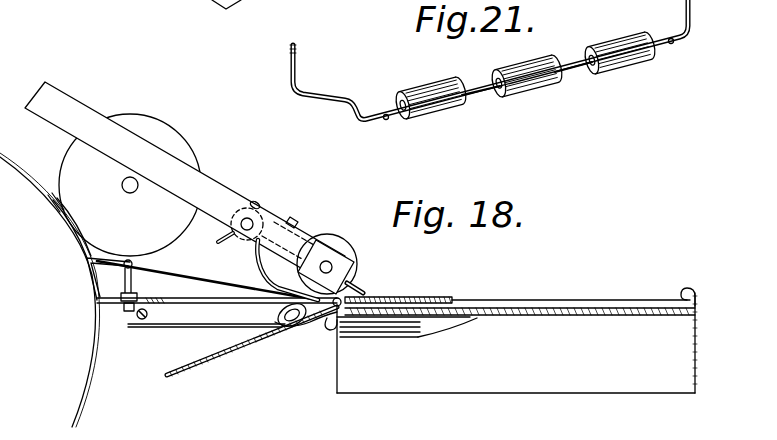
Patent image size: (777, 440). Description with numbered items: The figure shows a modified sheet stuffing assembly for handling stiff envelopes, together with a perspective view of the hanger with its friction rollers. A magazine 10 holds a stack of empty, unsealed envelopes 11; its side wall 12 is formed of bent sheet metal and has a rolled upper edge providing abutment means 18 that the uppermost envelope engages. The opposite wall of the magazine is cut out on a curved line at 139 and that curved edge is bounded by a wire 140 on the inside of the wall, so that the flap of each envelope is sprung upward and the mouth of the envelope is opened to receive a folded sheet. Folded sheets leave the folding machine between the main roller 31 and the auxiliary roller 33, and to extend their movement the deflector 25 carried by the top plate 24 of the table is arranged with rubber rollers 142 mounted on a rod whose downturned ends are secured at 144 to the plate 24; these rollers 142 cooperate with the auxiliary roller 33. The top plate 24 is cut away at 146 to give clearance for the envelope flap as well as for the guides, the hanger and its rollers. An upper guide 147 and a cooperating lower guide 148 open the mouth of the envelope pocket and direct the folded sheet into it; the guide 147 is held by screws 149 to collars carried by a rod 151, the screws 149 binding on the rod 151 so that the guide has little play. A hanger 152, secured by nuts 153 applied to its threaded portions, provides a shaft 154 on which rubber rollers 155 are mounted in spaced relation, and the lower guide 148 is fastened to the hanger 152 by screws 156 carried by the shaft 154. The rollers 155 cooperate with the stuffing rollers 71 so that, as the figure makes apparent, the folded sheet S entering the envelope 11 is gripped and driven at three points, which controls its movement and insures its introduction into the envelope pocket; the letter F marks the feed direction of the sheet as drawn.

In FIG. 18, the magazine 10 is at (575, 390).
In FIG. 18, the envelope 11 is at (512, 308).
In FIG. 18, the side wall 12 is at (692, 327).
In FIG. 18, the abutment means 18 is at (684, 289).
In FIG. 18, the top plate 24 is at (167, 306).
In FIG. 18, the deflector 25 is at (93, 278).
In FIG. 18, the main roller 31 is at (84, 382).
In FIG. 18, the auxiliary roller 33 is at (148, 127).
In FIG. 18, the stuffing rollers 71 is at (359, 268).
In FIG. 18, the cut out 139 is at (334, 328).
In FIG. 18, the wire 140 is at (373, 323).
In FIG. 18, the rubber rollers 142 is at (136, 267).
In FIG. 18, the securing point of rod ends 144 is at (124, 311).
In FIG. 18, the cutaway 146 is at (222, 310).
In FIG. 18, the upper guide 147 is at (262, 265).
In FIG. 18, the lower guide 148 is at (275, 313).
In FIG. 18, the screws 149 is at (258, 206).
In FIG. 18, the rod 151 is at (234, 212).
In FIG. 21, the hanger 152 is at (318, 97).
In FIG. 18, the hanger 152 is at (312, 246).
In FIG. 18, the nuts 153 is at (294, 228).
In FIG. 21, the shaft 154 is at (488, 90).
In FIG. 21, the rubber rollers 155 is at (440, 112).
In FIG. 18, the rubber rollers 155 is at (280, 327).
In FIG. 21, the screws 156 is at (387, 120).
In FIG. 18, the screws 156 is at (327, 320).
In FIG. 18, the feed rod F is at (223, 360).
In FIG. 18, the folded sheet S is at (182, 244).